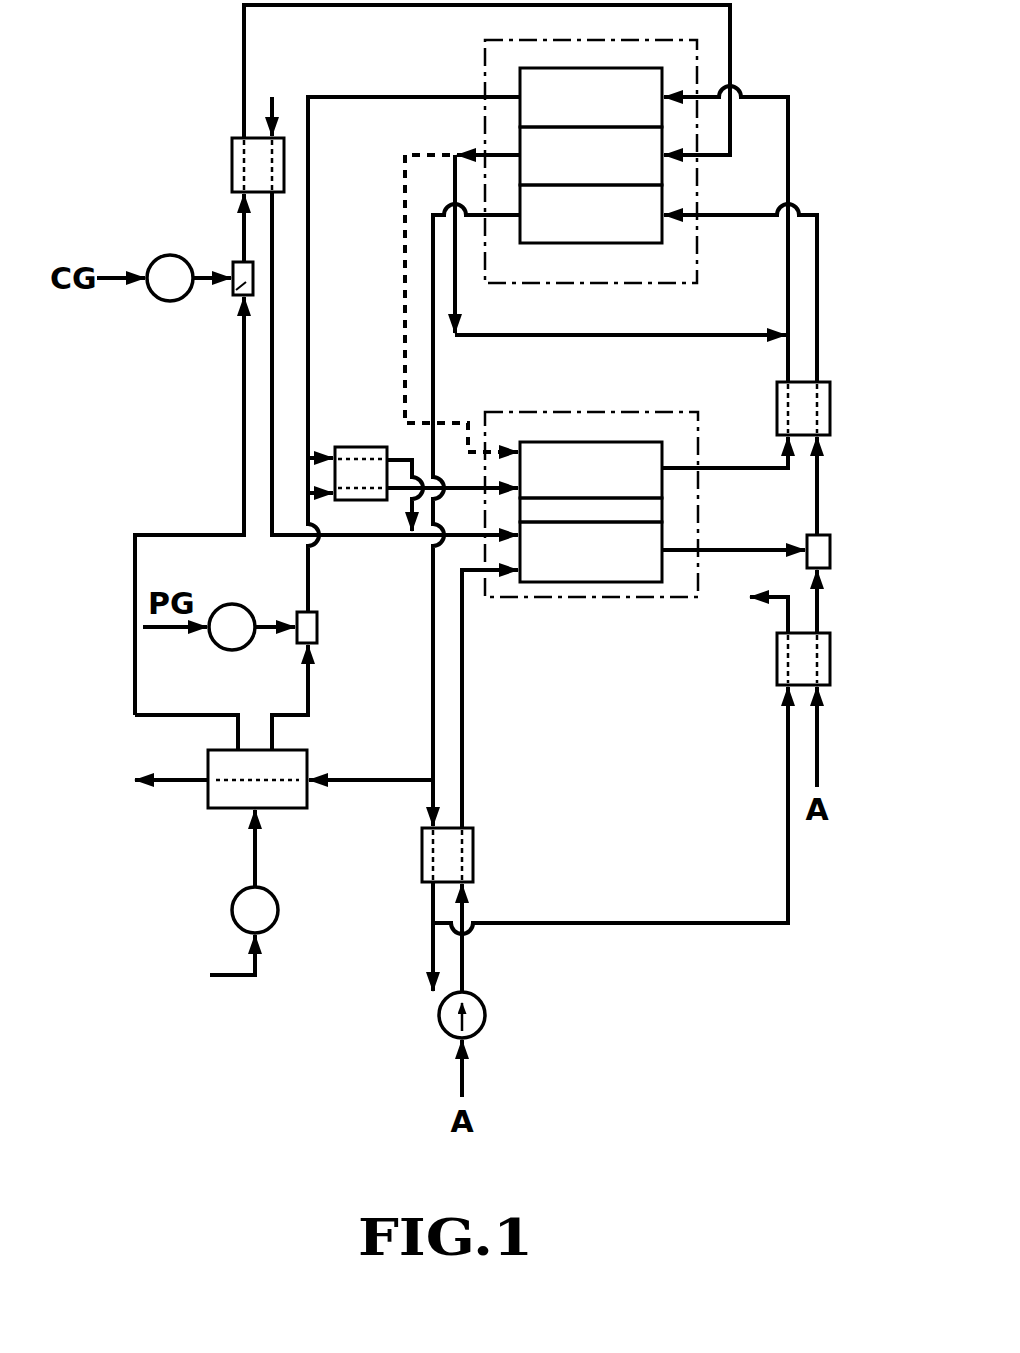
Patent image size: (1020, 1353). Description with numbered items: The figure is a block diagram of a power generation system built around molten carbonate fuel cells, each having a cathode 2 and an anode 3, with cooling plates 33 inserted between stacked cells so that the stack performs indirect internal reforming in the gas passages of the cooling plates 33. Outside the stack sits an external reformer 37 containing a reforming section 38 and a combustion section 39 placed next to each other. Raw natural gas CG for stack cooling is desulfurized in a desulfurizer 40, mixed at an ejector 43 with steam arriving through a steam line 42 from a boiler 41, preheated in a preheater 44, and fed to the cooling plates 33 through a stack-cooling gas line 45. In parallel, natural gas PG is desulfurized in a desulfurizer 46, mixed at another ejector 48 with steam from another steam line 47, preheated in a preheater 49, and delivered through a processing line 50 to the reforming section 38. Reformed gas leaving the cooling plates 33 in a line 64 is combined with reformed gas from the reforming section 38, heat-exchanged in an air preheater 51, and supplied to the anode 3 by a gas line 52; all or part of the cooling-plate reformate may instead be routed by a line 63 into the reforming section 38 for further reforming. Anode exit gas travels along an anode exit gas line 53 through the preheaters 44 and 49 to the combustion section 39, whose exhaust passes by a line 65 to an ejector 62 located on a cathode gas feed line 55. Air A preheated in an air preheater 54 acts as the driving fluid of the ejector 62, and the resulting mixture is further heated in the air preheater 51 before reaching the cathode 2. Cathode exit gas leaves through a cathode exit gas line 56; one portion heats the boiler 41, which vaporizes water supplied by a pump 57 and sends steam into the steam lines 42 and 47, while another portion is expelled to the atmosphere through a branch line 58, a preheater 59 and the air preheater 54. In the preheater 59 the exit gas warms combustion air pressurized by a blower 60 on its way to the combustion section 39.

The cathode electrode 2 is at (568, 234).
The anode electrode 3 is at (568, 117).
The cooling plate 33 is at (566, 175).
The external reformer 37 is at (617, 597).
The reforming section 38 is at (566, 490).
The combustion section 39 is at (566, 572).
The desulfurizer 40 is at (170, 302).
The boiler 41 is at (228, 800).
The steam line 42 is at (243, 458).
The ejector 43 is at (232, 297).
The preheater 44 is at (232, 170).
The stack-cooling gas line 45 is at (243, 40).
The desulfurizer 46 is at (226, 650).
The steam line 47 is at (309, 695).
The ejector 48 is at (318, 628).
The preheater 49 is at (372, 447).
The processing line 50 is at (457, 486).
The air preheater 51 is at (875, 430).
The gas line 52 is at (808, 60).
The anode exit gas line 53 is at (368, 97).
The air preheater 54 is at (830, 672).
The cathode gas feed line 55 is at (817, 255).
The cathode exit gas line 56 is at (433, 290).
The pump 57 is at (275, 920).
The branch line 58 is at (430, 795).
The preheater 59 is at (475, 865).
The blower 60 is at (485, 1025).
The ejector 62 is at (830, 553).
The line 63 is at (403, 202).
The line 64 is at (612, 337).
The line 65 is at (723, 550).